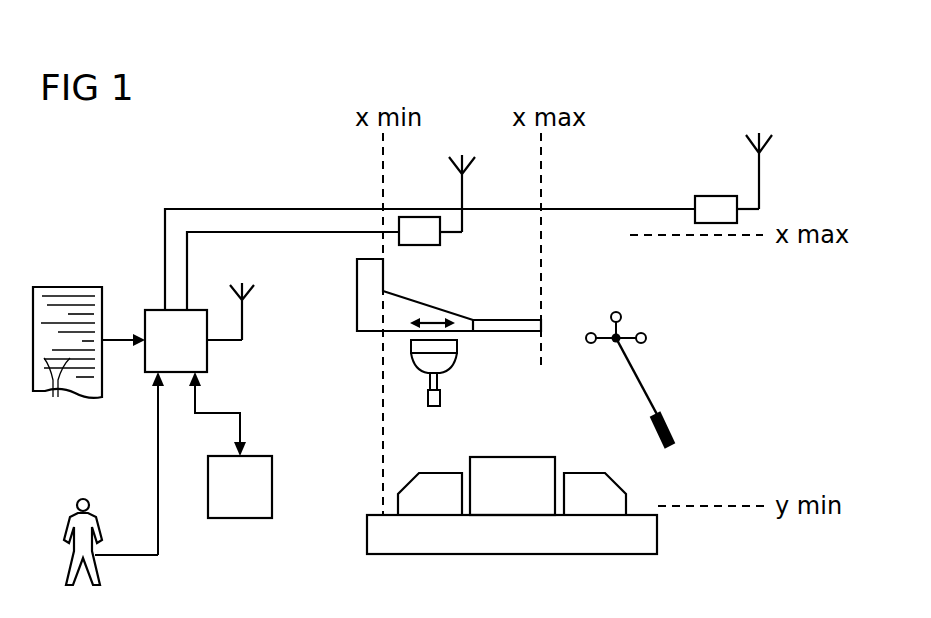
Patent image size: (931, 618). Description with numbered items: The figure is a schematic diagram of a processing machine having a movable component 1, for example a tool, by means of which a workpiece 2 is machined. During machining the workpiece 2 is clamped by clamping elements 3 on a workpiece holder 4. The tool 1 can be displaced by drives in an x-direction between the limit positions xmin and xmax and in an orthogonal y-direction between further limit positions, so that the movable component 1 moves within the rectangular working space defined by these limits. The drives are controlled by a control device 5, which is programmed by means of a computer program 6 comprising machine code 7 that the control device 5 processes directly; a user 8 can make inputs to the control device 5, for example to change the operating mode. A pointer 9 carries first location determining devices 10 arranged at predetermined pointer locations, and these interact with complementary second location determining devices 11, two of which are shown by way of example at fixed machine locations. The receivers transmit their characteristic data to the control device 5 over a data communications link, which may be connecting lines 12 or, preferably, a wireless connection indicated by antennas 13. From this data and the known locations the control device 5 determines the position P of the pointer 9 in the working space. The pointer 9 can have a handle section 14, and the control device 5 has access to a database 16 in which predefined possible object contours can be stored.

The movable component 1 is at (454, 394).
The workpiece 2 is at (513, 462).
The clamping elements 3 is at (440, 482).
The workpiece holder 4 is at (650, 535).
The control device 5 is at (153, 309).
The computer program 6 is at (65, 288).
The machine code 7 is at (57, 393).
The user 8 is at (84, 492).
The pointer 9 is at (640, 385).
The first location determining devices 10 is at (641, 333).
The second location determining devices 11 is at (423, 245).
The connecting lines 12 is at (298, 231).
The antennas 13 is at (248, 292).
The handle section 14 is at (670, 431).
The database 16 is at (272, 487).
The position P is at (612, 341).